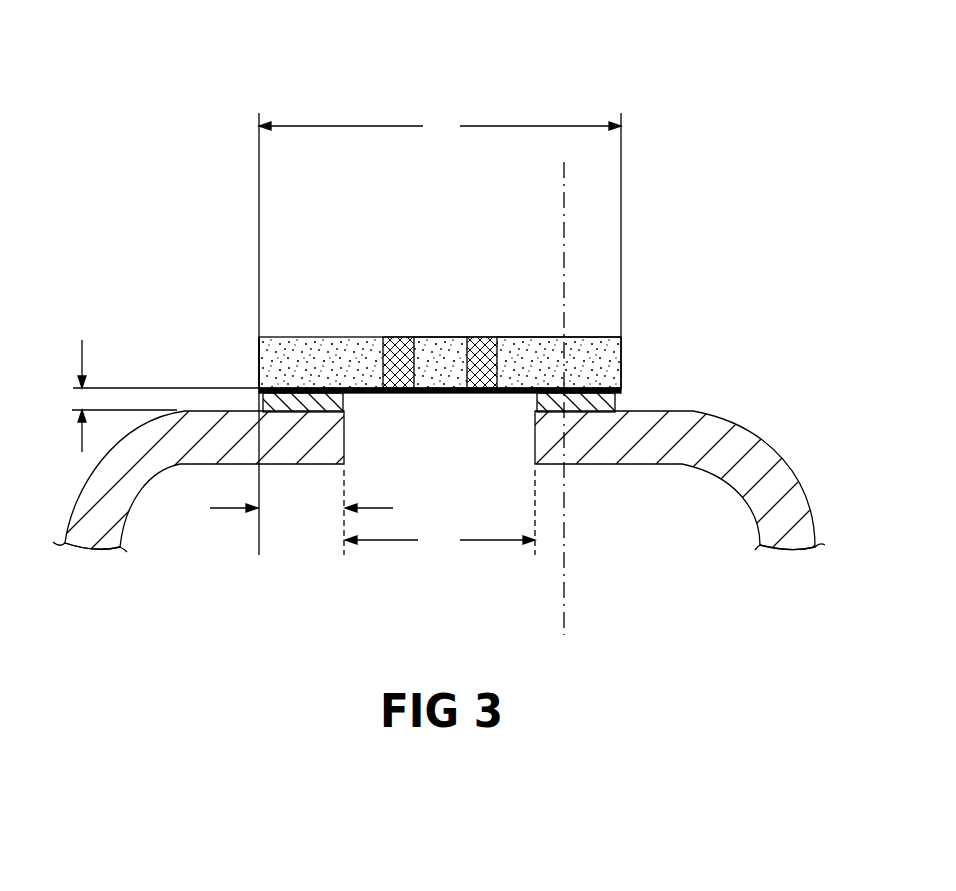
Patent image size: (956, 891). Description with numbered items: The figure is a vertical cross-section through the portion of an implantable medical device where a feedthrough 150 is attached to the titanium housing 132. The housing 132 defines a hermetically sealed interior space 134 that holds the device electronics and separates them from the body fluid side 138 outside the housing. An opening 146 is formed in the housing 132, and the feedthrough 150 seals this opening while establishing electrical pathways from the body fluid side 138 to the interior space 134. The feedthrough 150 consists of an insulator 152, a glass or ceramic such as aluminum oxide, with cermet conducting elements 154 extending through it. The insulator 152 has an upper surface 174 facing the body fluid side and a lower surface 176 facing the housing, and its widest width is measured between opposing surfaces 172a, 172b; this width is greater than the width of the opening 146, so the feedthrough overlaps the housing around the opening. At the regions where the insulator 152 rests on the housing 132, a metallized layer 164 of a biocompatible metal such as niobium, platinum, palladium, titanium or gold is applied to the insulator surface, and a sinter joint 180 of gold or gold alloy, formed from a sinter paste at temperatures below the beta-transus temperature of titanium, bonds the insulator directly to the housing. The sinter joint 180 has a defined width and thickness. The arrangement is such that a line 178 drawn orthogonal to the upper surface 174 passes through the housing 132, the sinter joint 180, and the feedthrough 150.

The housing 132 is at (777, 443).
The interior space 134 is at (240, 607).
The body fluid side 138 is at (145, 202).
The opening 146 is at (477, 445).
The feedthrough 150 is at (572, 66).
The insulator 152 is at (320, 337).
The conducting elements 154 is at (397, 338).
The metallized layer 164 is at (620, 394).
The opposing surface 172a is at (622, 357).
The opposing surface 172b is at (258, 358).
The upper surface 174 is at (540, 337).
The lower surface 176 is at (440, 393).
The line 178 is at (563, 217).
The sinter joint 180 is at (618, 402).